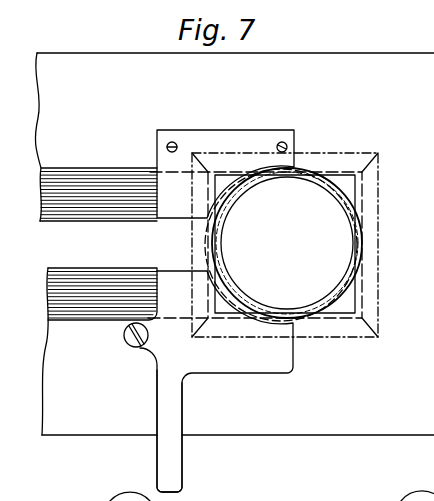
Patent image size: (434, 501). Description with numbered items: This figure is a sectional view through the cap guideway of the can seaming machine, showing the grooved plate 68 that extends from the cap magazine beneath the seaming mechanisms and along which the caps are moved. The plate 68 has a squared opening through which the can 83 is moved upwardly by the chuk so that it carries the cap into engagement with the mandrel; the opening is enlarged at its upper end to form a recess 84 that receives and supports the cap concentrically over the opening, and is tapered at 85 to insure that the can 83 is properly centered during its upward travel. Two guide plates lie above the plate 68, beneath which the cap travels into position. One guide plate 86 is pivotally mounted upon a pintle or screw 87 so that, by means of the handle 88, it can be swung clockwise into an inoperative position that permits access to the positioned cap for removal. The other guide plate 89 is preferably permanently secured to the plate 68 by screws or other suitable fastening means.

The grooved plate 68 is at (303, 59).
The can 83 is at (353, 252).
The recess 84 is at (354, 166).
The tapered portion 85 is at (368, 193).
The guide plate 86 is at (249, 368).
The pintle or screw 87 is at (137, 348).
The handle 88 is at (183, 452).
The guide plate 89 is at (200, 137).